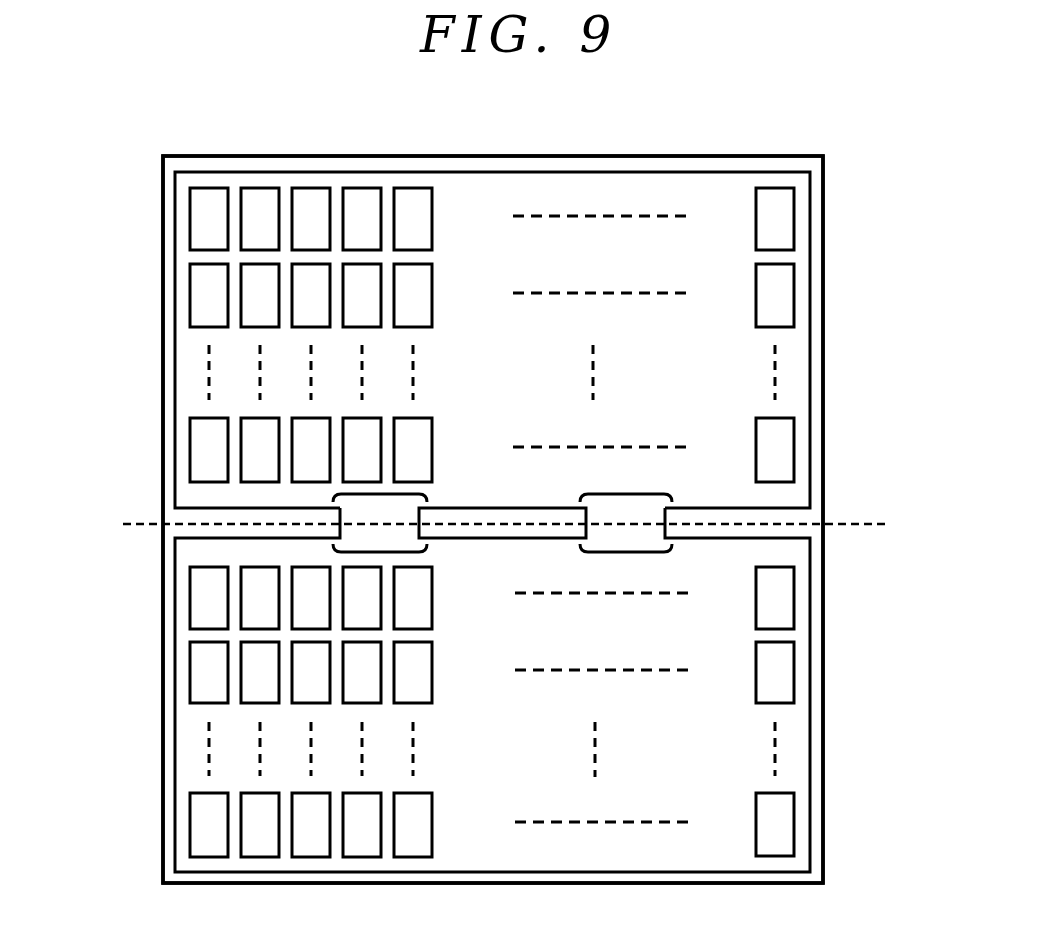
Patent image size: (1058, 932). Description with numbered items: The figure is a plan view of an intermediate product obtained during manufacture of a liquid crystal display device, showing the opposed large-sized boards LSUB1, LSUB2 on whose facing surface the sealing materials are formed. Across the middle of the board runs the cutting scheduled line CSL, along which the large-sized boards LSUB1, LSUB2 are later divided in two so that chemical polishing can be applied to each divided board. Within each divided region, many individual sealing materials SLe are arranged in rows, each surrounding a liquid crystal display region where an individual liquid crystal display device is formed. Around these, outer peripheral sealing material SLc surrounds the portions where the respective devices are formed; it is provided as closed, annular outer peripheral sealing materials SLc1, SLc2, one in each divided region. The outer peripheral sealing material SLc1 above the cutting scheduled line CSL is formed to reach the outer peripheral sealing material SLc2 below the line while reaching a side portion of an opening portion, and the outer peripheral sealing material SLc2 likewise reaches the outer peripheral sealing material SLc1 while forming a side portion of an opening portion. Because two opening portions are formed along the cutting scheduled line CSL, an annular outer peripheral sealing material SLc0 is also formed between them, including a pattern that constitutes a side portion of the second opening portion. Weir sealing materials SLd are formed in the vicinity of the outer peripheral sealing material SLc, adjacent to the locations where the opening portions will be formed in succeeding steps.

The individual sealing material SLe is at (189, 215).
The outer peripheral sealing material SLc is at (511, 522).
The outer peripheral sealing material SLc1 is at (810, 328).
The outer peripheral sealing material SLc2 is at (810, 655).
The annular outer peripheral sealing material SLc0 is at (482, 538).
The weir sealing material SLd is at (638, 495).
The cutting scheduled line CSL is at (502, 521).
The large-sized board LSUB1 is at (823, 747).
The large-sized board LSUB2 is at (557, 519).